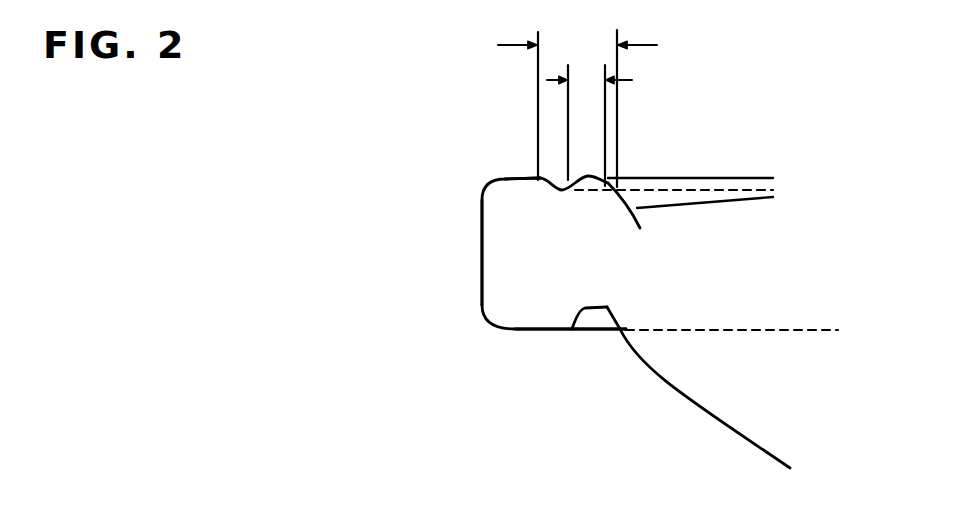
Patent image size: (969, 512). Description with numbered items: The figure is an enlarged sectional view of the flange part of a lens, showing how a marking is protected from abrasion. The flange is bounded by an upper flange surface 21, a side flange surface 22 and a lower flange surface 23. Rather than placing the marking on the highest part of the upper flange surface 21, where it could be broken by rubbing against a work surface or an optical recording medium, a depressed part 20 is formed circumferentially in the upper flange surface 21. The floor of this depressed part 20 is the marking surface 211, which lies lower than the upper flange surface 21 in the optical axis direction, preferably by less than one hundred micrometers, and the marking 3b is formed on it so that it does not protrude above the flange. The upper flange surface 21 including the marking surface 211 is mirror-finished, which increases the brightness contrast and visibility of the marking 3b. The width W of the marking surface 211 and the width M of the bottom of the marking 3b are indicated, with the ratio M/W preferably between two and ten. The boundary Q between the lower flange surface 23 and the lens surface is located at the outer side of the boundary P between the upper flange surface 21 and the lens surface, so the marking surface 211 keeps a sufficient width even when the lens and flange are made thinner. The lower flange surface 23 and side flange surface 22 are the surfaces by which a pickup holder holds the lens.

The depressed part 20 is at (562, 183).
The upper flange surface 21 is at (517, 178).
The side flange surface 22 is at (482, 262).
The lower flange surface 23 is at (540, 329).
The marking 3b is at (600, 158).
The marking surface 211 is at (678, 189).
The boundary between upper flange surface and lens surface P is at (640, 228).
The boundary between lower flange surface and lens surface Q is at (610, 306).
The width of the marking surface W is at (577, 94).
The width of the bottom of the marking M is at (589, 122).